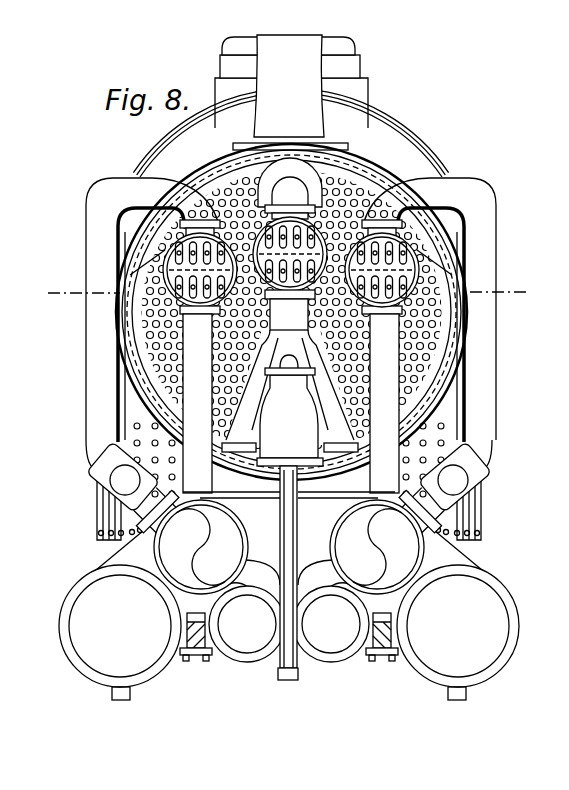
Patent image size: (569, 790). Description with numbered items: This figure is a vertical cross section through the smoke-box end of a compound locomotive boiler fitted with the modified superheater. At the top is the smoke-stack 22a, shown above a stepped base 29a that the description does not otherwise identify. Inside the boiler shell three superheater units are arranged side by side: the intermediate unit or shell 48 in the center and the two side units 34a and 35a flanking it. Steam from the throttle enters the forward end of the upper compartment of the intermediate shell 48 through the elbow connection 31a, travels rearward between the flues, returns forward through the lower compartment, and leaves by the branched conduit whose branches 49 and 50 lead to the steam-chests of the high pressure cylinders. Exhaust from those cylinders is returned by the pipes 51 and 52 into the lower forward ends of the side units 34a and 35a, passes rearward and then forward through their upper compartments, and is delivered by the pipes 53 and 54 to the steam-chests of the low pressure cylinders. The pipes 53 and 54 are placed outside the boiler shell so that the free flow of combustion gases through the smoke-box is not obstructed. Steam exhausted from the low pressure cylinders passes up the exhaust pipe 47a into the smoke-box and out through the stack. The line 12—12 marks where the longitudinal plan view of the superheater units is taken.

The smoke-stack 22a is at (289, 86).
The stack base dome 29a is at (363, 68).
The elbow connection 31a is at (300, 194).
The intermediate superheater unit or shell 48 is at (307, 230).
The side superheater unit or shell 34a is at (168, 291).
The side superheater unit or shell 35a is at (420, 258).
The section line 12— 12 is at (537, 302).
The steam pipe or conduit 51 is at (197, 403).
The steam pipe or conduit 52 is at (383, 403).
The branch of steam conduit 49 is at (250, 391).
The branch of steam conduit 50 is at (330, 391).
The exhaust pipe or conduit 47a is at (290, 410).
The steam pipe or conduit 53 is at (123, 460).
The steam pipe or conduit 54 is at (455, 455).